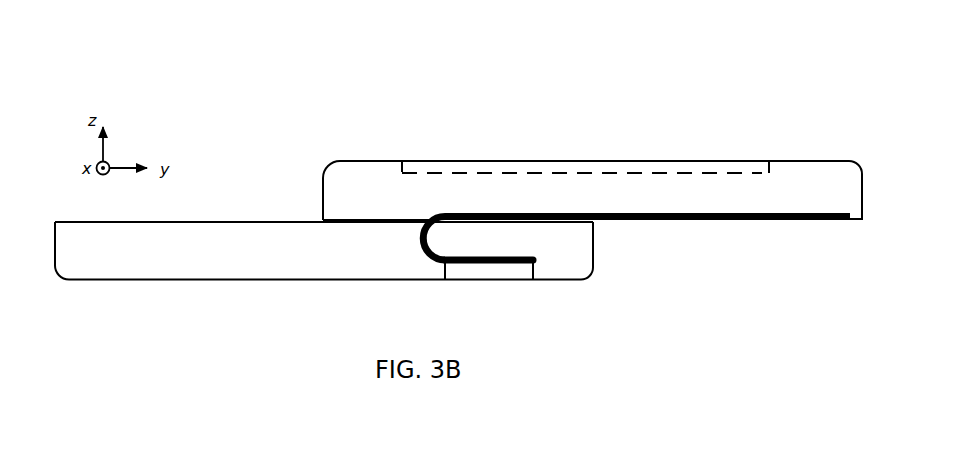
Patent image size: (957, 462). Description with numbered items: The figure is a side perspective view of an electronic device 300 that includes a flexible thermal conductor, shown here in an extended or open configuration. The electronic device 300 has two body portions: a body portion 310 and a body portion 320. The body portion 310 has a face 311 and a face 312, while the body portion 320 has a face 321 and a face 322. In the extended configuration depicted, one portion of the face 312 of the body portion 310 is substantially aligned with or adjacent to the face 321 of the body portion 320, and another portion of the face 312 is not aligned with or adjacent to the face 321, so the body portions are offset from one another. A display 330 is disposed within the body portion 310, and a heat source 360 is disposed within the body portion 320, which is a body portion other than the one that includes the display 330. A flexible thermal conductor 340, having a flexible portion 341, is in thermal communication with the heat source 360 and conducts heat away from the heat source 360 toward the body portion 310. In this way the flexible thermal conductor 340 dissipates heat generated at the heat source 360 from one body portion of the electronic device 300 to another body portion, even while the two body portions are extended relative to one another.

The electronic device 300 is at (229, 86).
The body portion 310 is at (851, 160).
The face 311 is at (353, 149).
The face 312 is at (329, 207).
The body portion 320 is at (582, 280).
The face 321 is at (80, 237).
The face 322 is at (105, 294).
The display 330 is at (581, 151).
The flexible thermal conductor 340 is at (653, 221).
The flexible portion 341 is at (401, 240).
The heat source 360 is at (510, 270).